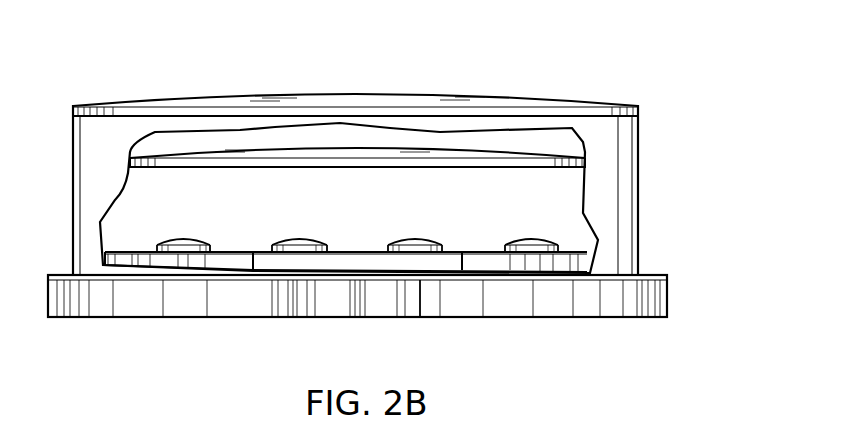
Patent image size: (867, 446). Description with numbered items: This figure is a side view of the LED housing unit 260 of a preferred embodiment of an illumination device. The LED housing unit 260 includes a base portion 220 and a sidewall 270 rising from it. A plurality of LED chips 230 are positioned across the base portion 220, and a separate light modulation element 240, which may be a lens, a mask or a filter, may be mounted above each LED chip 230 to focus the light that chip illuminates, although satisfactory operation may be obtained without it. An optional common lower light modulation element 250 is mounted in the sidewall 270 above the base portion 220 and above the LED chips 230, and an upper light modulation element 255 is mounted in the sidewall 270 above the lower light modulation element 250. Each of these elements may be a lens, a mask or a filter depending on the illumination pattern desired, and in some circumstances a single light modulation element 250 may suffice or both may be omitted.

The base portion 220 is at (668, 298).
The LED chips 230 is at (503, 251).
The light modulation element 240 is at (545, 242).
The lower light modulation element 250 is at (315, 167).
The upper light modulation element 255 is at (472, 98).
The LED housing unit 260 is at (372, 357).
The sidewall 270 is at (642, 205).